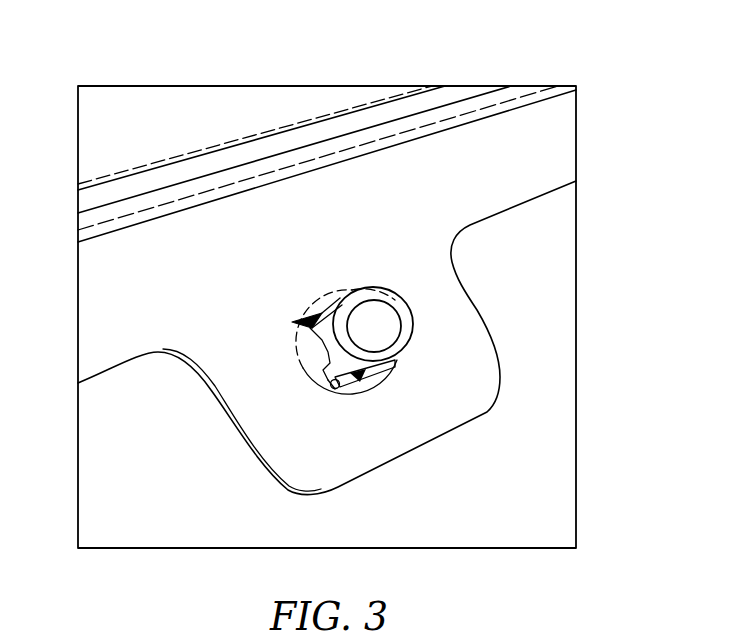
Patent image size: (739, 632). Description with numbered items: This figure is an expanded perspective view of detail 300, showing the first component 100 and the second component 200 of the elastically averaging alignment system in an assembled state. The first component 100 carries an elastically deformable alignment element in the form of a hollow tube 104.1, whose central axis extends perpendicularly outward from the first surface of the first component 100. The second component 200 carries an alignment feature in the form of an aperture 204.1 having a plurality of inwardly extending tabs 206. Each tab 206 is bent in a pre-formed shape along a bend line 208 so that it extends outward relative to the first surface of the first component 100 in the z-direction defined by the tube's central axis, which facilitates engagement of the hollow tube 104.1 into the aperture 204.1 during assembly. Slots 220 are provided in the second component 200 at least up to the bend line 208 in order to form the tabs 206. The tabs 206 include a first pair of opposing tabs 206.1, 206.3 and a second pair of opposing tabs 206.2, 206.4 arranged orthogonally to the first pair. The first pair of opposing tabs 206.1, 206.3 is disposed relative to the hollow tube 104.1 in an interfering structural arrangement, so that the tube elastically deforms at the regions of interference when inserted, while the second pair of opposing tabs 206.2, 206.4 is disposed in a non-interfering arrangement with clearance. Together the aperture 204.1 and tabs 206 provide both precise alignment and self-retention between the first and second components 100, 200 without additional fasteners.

The detail 300 is at (121, 80).
The second component 200 is at (546, 152).
The first component 100 is at (503, 281).
The fastener head 104.1 is at (415, 330).
The inwardly extending tabs 206 is at (374, 390).
The opposing tab of first pair 206.1 is at (310, 345).
The opposing tab of second pair 206.2 is at (320, 300).
The opposing tab of first pair 206.3 is at (416, 305).
The opposing tab of second pair 206.4 is at (382, 378).
The slots 220 is at (293, 318).
The bend lines 208 is at (305, 356).
The panel flange 204.1 is at (327, 377).